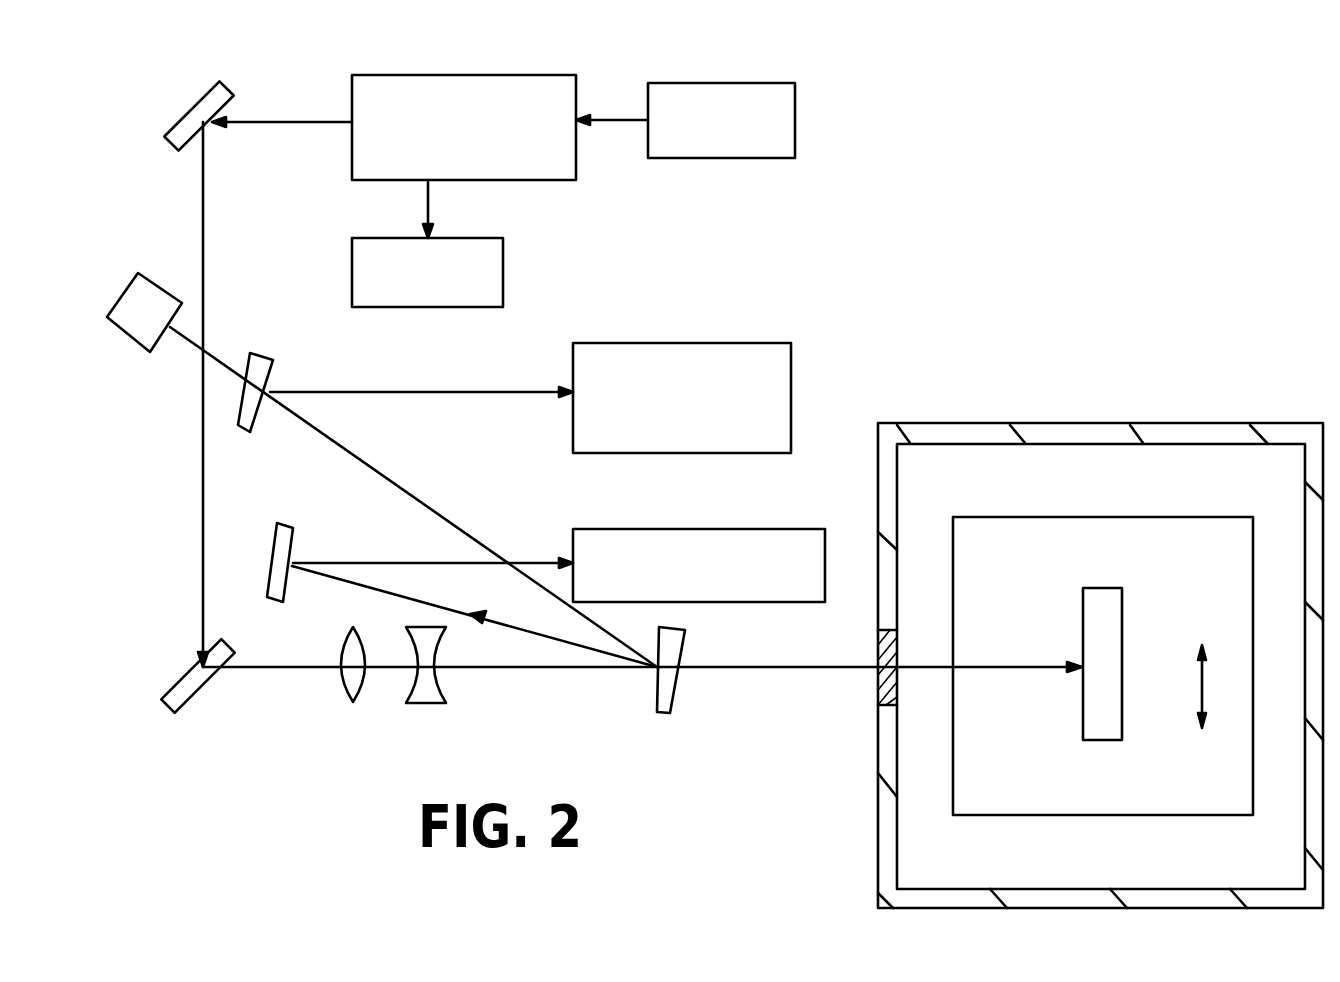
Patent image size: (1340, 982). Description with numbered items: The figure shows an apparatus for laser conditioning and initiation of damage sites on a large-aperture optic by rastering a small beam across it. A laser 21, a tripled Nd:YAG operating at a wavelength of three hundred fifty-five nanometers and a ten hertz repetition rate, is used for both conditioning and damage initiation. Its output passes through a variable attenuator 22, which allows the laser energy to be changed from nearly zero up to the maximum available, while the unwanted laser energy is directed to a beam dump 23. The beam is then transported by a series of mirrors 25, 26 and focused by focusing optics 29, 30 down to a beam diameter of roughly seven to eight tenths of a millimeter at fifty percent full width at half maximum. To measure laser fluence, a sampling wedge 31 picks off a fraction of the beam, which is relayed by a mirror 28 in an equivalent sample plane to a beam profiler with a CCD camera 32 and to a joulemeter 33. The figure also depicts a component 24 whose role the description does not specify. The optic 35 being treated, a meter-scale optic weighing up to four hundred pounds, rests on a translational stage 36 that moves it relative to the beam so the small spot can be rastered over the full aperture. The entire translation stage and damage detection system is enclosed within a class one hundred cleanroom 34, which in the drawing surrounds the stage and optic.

The laser 21 is at (682, 158).
The variable attenuator 22 is at (576, 170).
The beam dump 23 is at (503, 262).
The illumination source 24 is at (148, 352).
The mirror 25 is at (190, 112).
The mirror 26 is at (196, 690).
The mirror 28 is at (270, 355).
The focusing optic 29 is at (345, 697).
The focusing optic 30 is at (428, 705).
The sampling wedge 31 is at (675, 683).
The CCD camera 32 is at (722, 343).
The joulemeter 33 is at (742, 529).
The class 100 cleanroom 34 is at (1200, 423).
The meter-scale optic 35 is at (1122, 622).
The translational stage 36 is at (1042, 792).